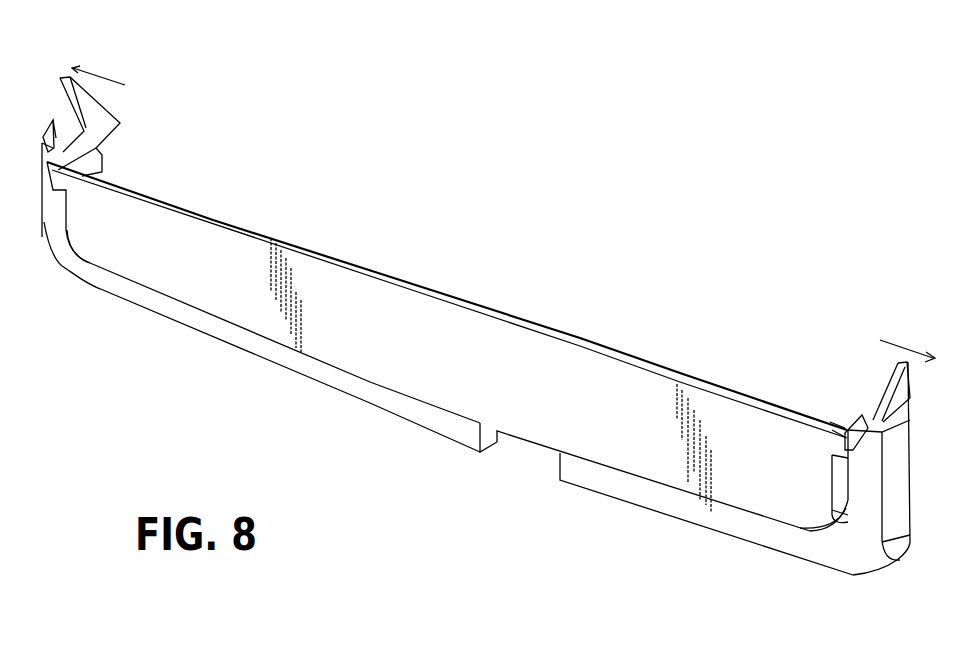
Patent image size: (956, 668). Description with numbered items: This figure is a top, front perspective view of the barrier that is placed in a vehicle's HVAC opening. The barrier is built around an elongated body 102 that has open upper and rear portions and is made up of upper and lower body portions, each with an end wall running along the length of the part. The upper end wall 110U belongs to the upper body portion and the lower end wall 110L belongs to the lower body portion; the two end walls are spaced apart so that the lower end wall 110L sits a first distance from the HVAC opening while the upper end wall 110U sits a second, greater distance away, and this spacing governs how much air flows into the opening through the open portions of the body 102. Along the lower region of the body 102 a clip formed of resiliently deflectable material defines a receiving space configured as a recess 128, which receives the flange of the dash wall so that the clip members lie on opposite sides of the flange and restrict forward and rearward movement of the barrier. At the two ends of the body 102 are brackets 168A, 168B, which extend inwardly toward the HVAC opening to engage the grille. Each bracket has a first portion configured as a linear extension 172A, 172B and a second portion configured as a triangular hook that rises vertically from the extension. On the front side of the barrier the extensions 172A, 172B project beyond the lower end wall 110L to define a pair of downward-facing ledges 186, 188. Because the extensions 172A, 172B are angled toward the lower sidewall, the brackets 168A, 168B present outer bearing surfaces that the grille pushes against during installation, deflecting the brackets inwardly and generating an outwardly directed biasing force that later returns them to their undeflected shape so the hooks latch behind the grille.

The body 102 is at (220, 188).
The upper end wall 110U is at (198, 283).
The lower end wall 110L is at (860, 553).
The recess 128 is at (523, 460).
The bracket 168A is at (119, 113).
The bracket 168B is at (908, 393).
The linear extension 172A is at (860, 415).
The linear extension 172B is at (45, 142).
The ledge 186 is at (840, 457).
The ledge 188 is at (42, 237).